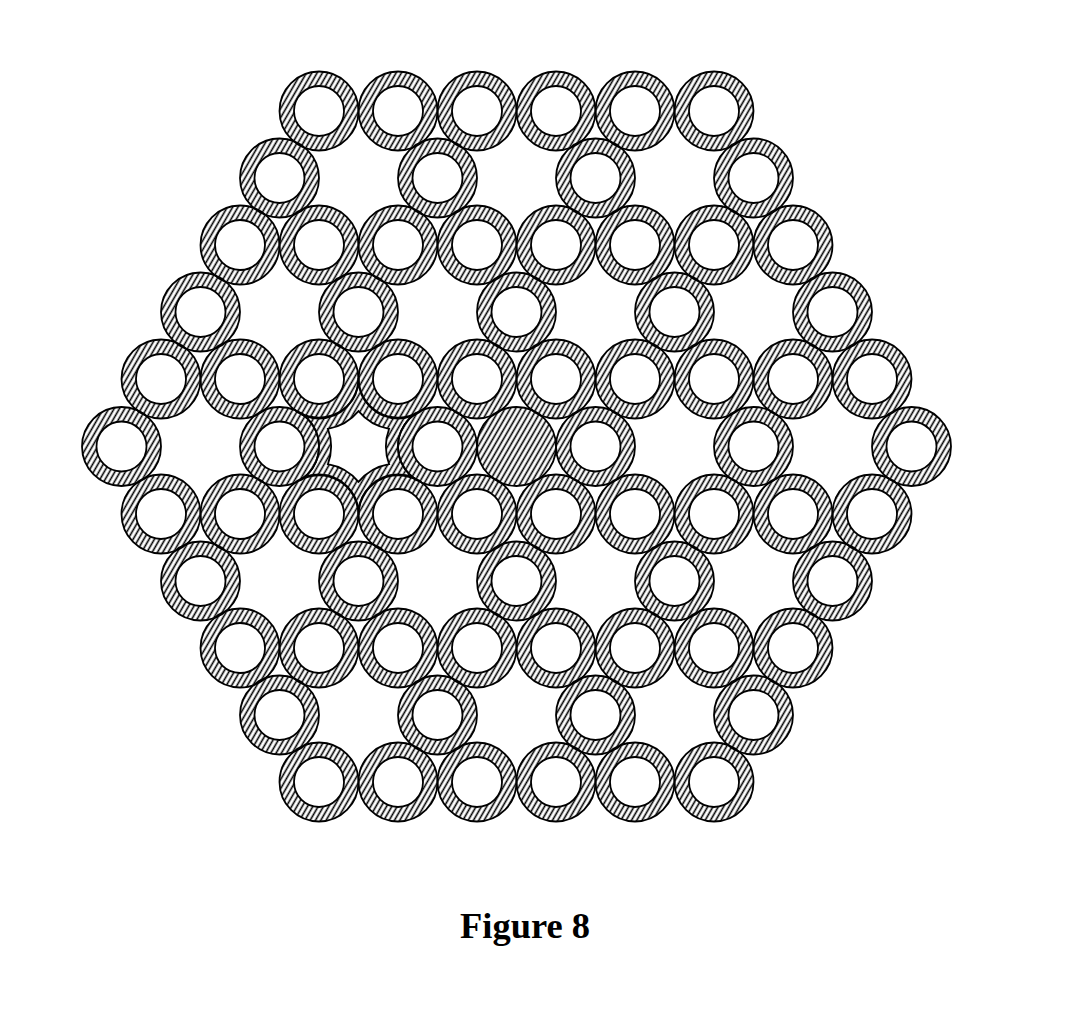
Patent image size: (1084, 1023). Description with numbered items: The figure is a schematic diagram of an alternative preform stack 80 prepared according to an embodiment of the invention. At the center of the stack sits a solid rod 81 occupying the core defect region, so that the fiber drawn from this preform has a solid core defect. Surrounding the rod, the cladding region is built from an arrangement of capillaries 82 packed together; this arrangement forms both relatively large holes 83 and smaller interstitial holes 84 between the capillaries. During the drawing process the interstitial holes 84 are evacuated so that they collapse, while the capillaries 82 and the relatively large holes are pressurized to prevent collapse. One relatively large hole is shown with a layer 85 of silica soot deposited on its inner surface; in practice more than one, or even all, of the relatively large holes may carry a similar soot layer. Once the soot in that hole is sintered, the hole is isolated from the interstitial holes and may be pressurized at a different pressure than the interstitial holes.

The preform stack 80 is at (151, 120).
The solid rod 81 is at (520, 447).
The capillaries 82 is at (733, 808).
The relatively large holes 83 is at (747, 300).
The interstitial holes 84 is at (752, 670).
The layer of silica soot 85 is at (340, 473).